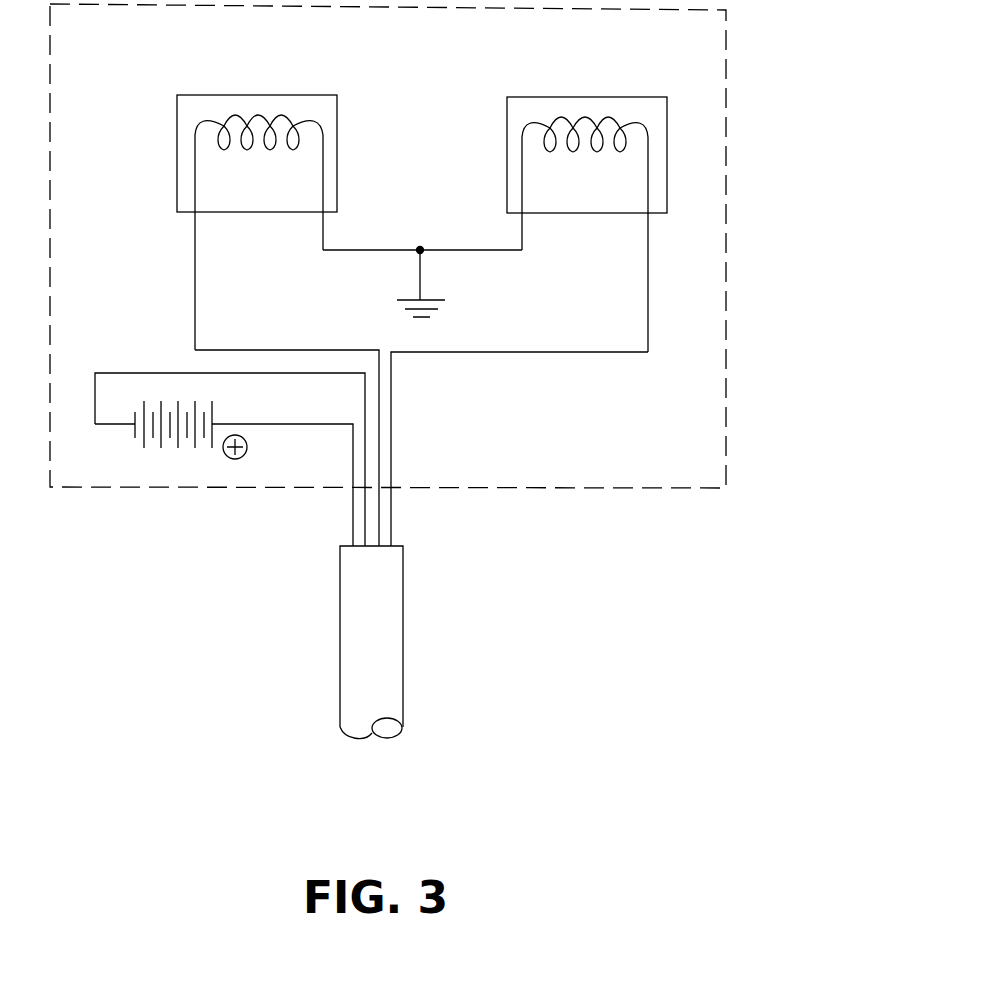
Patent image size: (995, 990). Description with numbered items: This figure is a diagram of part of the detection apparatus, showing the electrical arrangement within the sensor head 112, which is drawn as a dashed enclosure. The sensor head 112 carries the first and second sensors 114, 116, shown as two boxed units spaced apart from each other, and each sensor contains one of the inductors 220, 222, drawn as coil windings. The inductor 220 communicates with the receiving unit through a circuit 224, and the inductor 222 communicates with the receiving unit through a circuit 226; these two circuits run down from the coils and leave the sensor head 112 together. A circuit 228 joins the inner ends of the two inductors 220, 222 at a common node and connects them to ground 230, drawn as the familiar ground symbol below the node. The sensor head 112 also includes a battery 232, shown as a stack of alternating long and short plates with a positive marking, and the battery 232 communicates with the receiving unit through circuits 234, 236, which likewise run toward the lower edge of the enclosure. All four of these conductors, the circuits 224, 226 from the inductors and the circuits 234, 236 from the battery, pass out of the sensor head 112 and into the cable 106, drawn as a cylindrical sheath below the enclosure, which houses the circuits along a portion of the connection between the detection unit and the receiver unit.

The cable 106 is at (403, 633).
The sensor head 112 is at (726, 420).
The first sensor 114 is at (667, 158).
The second sensor 116 is at (177, 132).
The inductor 220 is at (581, 120).
The inductor 222 is at (243, 118).
The circuit 224 is at (558, 353).
The circuit 226 is at (195, 268).
The circuit 228 is at (375, 250).
The ground 230 is at (445, 300).
The battery 232 is at (143, 447).
The circuit 234 is at (313, 427).
The circuit 236 is at (285, 373).